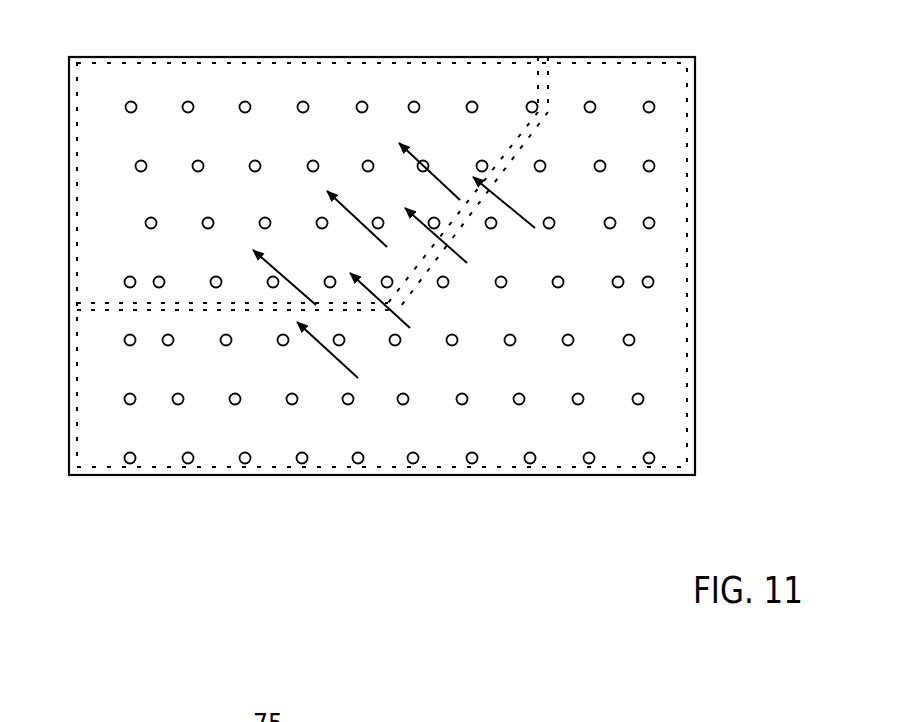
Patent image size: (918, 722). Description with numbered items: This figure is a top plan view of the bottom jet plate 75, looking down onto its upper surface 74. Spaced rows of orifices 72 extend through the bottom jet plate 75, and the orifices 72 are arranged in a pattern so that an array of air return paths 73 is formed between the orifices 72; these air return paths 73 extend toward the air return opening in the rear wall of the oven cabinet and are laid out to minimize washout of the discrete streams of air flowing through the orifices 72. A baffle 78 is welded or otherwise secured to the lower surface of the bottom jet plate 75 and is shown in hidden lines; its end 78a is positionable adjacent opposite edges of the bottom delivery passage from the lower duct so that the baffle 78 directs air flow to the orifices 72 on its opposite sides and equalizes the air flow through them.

The orifices 72 is at (472, 107).
The air return paths 73 is at (382, 242).
The upper surface 74 is at (250, 88).
The bottom jet plate 75 is at (699, 160).
The baffle 78 is at (409, 282).
The end of baffle 78a is at (542, 112).